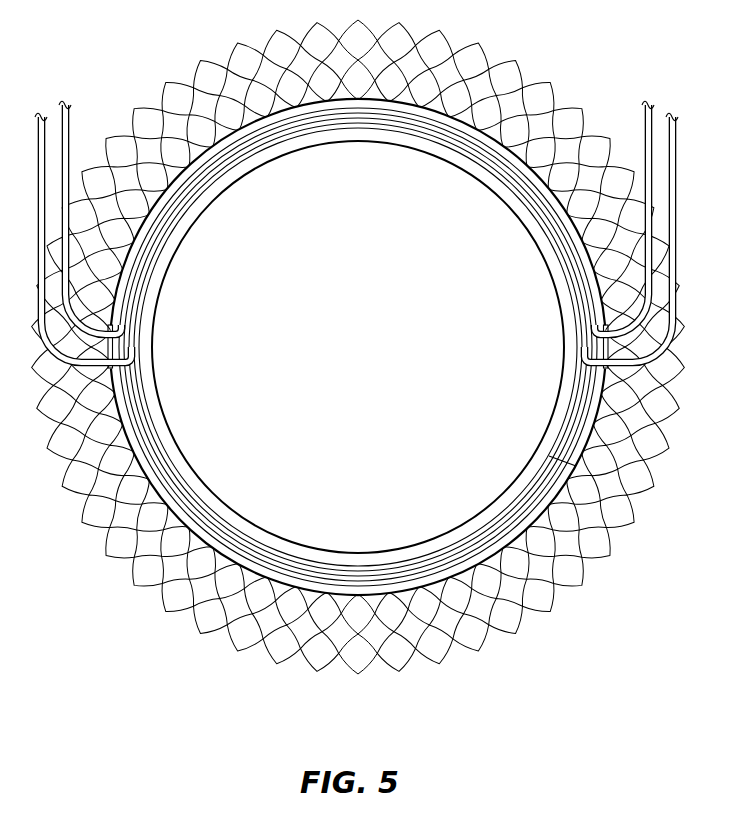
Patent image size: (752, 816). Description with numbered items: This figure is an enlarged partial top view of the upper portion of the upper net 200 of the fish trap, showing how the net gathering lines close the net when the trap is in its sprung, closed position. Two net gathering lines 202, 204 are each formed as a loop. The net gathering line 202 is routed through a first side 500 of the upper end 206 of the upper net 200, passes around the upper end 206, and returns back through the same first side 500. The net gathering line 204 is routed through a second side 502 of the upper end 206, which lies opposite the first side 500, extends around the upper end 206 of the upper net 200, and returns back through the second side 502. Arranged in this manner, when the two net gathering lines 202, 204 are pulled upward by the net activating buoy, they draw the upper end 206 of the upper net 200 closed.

The upper net 200 is at (263, 643).
The net gathering line 202 is at (68, 158).
The net gathering line 204 is at (645, 163).
The upper end of the upper net 206 is at (477, 595).
The first side of the upper end 500 is at (40, 358).
The second side of the upper end 502 is at (700, 344).